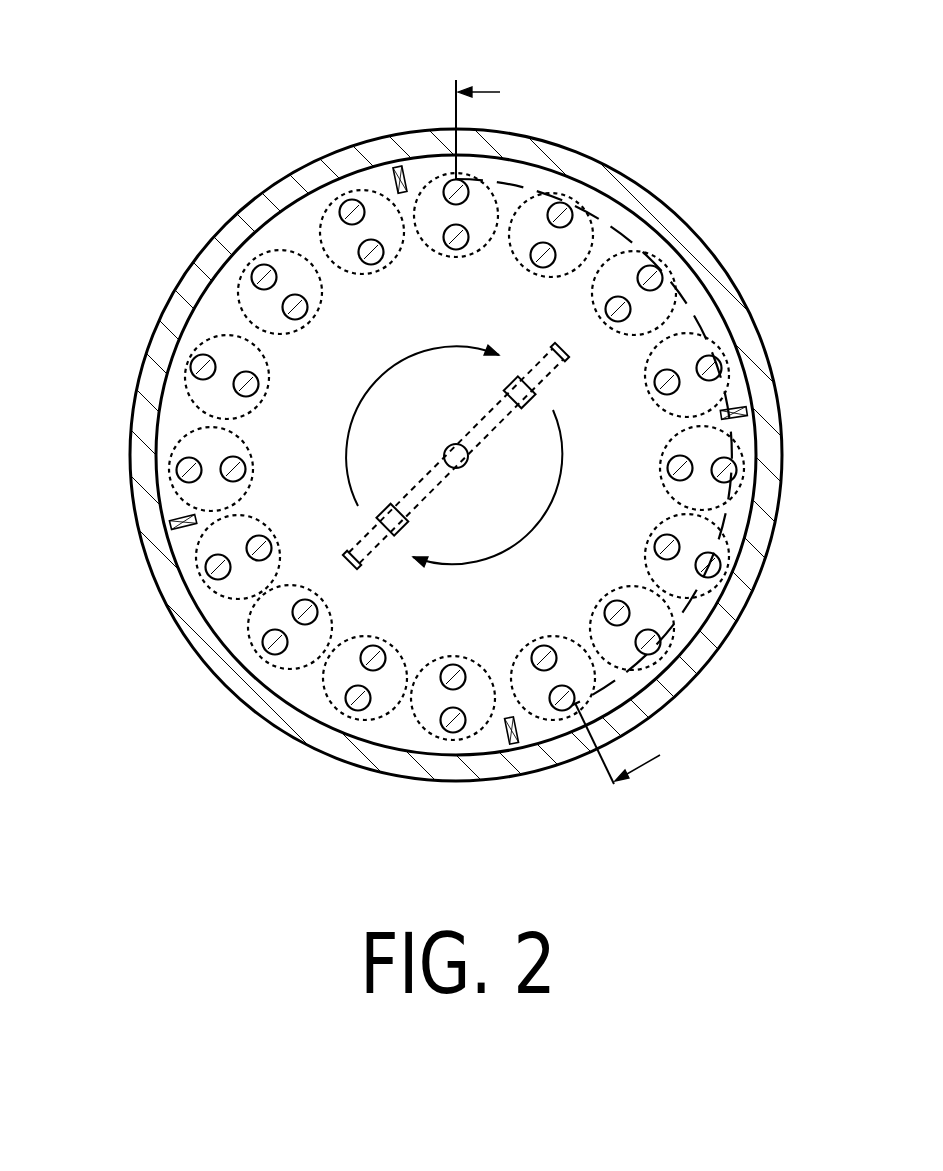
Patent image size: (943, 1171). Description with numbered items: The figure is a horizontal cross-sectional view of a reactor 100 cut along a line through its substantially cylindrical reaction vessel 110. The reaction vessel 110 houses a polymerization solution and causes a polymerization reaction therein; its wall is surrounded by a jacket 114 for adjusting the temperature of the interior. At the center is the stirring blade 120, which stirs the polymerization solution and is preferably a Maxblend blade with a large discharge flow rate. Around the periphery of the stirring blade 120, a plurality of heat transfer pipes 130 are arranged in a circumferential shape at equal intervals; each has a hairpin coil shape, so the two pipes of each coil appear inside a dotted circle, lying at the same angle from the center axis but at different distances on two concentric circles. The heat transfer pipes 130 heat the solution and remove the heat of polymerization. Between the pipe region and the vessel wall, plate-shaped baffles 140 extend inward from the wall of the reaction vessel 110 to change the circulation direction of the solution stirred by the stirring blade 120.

The reactor 100 is at (181, 34).
The reaction vessel 110 is at (203, 201).
The jacket 114 is at (230, 692).
The stirring blade 120 is at (360, 568).
The heat transfer pipes 130 is at (231, 387).
The baffles 140 is at (178, 530).